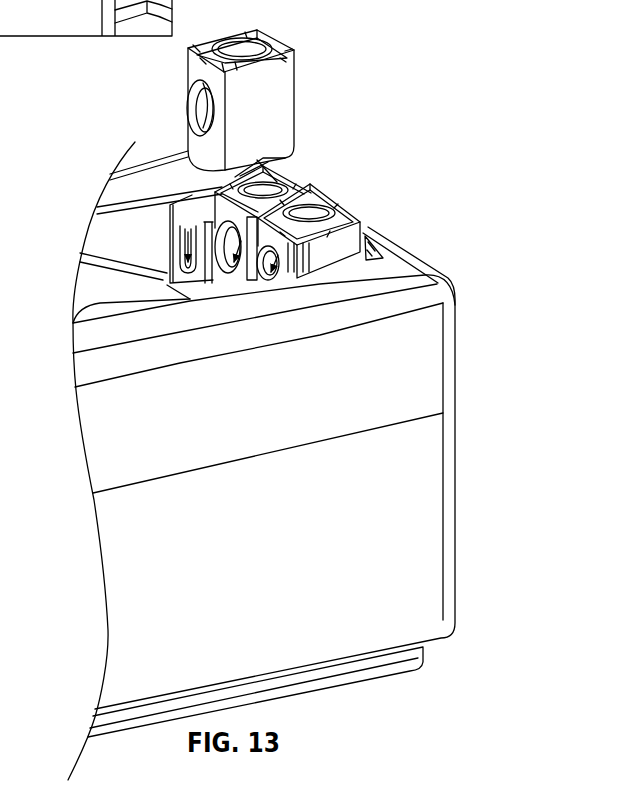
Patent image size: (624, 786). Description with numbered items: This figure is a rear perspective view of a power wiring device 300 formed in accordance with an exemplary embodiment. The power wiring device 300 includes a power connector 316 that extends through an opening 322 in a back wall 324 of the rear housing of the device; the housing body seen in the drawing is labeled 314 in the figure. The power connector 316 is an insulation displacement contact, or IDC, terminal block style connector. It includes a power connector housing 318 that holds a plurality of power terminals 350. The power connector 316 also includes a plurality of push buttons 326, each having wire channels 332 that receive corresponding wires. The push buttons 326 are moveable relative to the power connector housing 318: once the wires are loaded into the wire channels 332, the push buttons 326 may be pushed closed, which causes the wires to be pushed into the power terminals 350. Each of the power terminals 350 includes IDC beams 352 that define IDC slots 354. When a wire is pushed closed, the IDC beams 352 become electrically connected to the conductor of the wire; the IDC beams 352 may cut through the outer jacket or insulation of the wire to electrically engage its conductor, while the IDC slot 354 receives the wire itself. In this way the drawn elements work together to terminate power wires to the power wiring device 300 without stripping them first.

The power wiring device 300 is at (405, 86).
The housing 314 is at (443, 350).
The power connector 316 is at (281, 28).
The power connector housing 318 is at (262, 173).
The opening 322 is at (158, 262).
The back wall 324 is at (388, 267).
The push buttons 326 is at (368, 232).
The wire channels 332 is at (261, 285).
The power terminals 350 is at (178, 282).
The IDC beams 352 is at (178, 268).
The IDC slots 354 is at (168, 215).